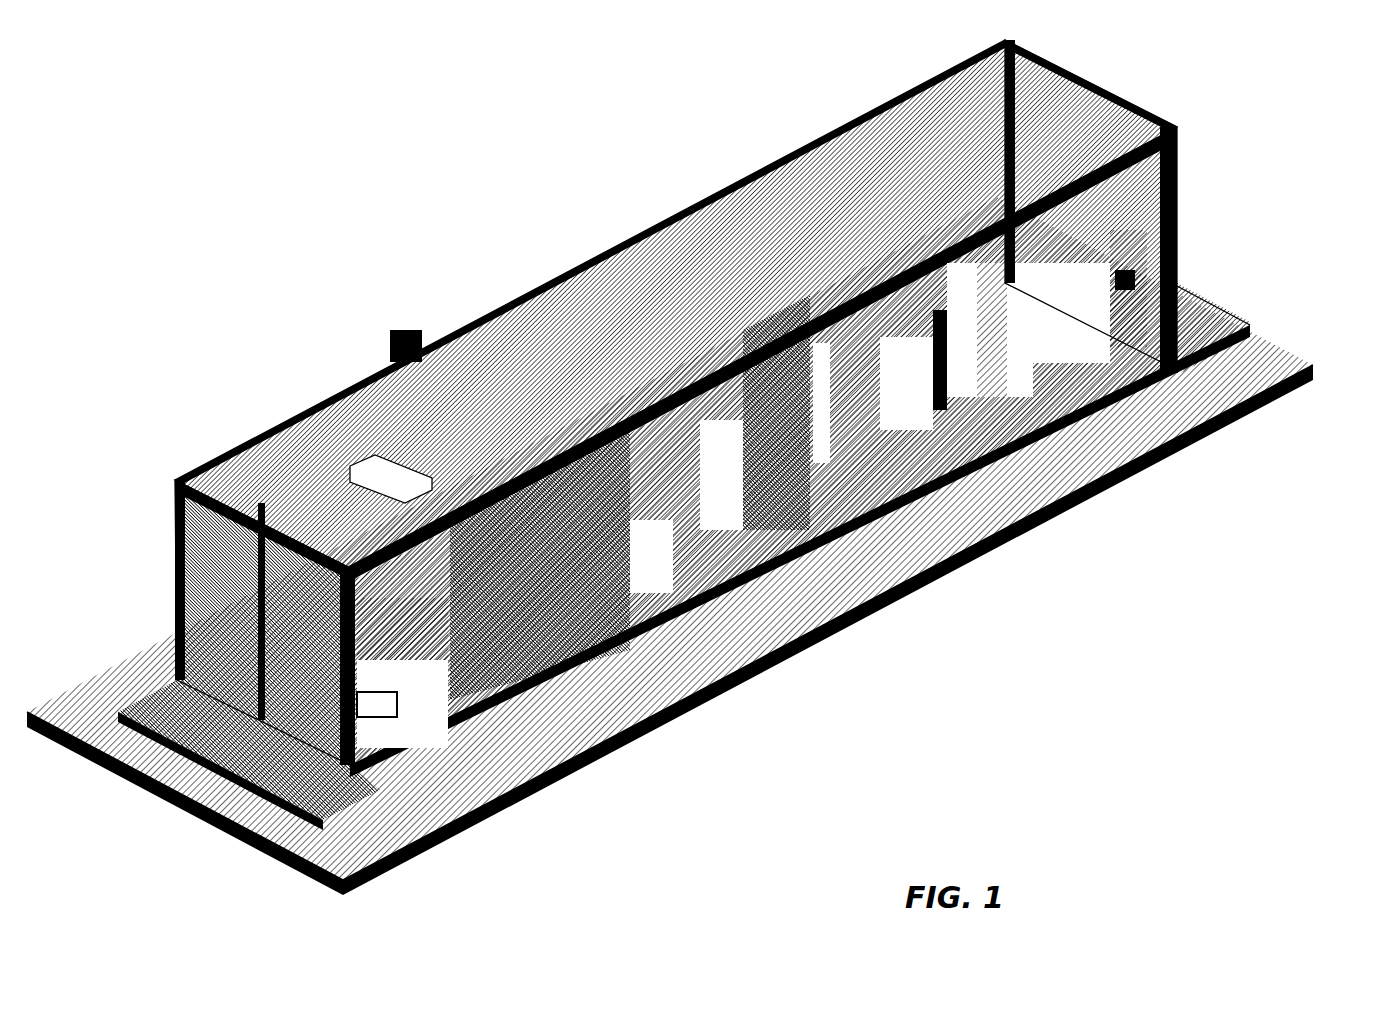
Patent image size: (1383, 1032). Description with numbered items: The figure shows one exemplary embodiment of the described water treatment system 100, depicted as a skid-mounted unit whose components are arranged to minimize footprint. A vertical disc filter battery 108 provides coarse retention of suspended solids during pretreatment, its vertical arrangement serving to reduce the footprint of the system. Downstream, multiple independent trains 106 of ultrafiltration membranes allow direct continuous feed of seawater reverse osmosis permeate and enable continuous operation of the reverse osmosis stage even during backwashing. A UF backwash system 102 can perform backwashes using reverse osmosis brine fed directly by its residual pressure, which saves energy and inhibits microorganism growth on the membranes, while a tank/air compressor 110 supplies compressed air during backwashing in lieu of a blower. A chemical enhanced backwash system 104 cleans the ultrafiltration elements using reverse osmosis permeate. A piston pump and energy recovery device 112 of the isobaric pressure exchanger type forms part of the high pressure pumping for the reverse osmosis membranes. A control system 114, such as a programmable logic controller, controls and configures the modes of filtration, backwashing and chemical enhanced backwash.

The system 100 is at (1249, 100).
The UF backwash system 102 is at (545, 290).
The chemical enhanced backwash (CEB) system 104 is at (1000, 231).
The independent trains of UF membranes 106 is at (1041, 349).
The vertical disc filter battery 108 is at (735, 197).
The tank/air compressor 110 is at (1127, 277).
The piston pump and energy recovery device 112 is at (397, 610).
The control system 114 is at (397, 710).